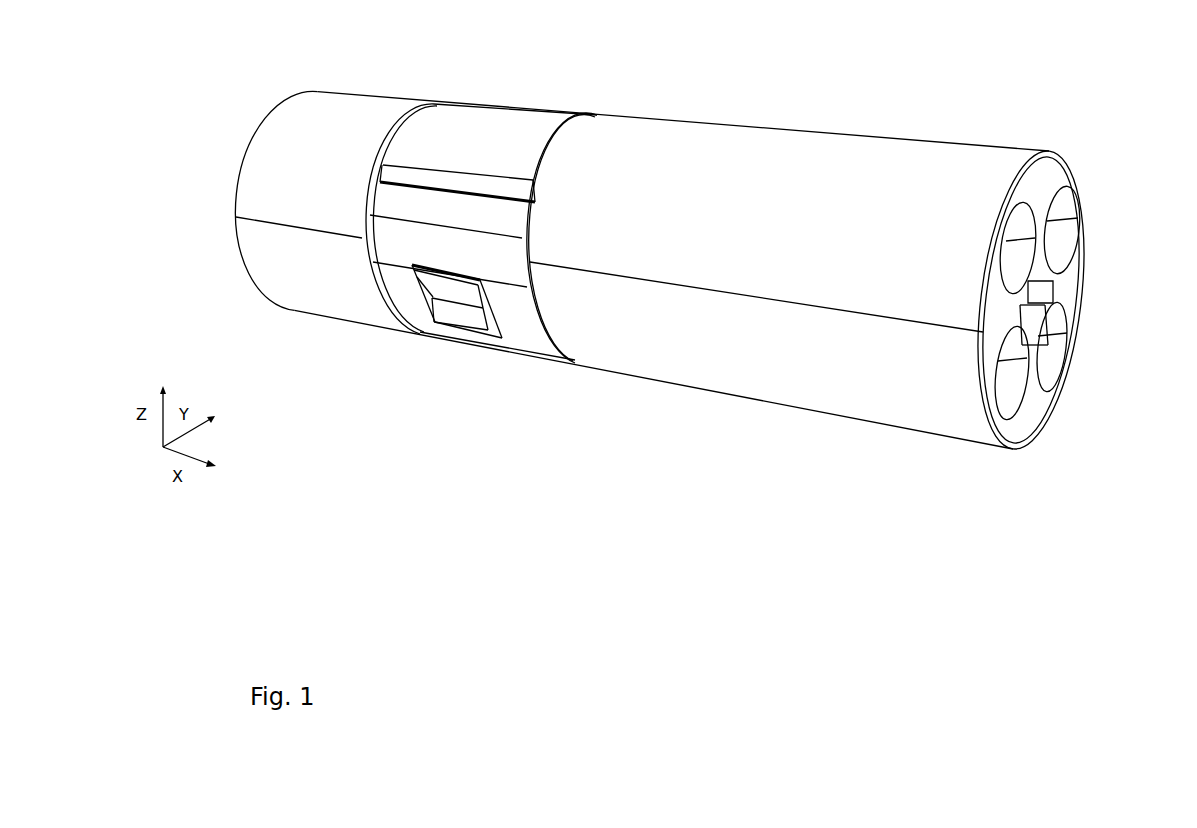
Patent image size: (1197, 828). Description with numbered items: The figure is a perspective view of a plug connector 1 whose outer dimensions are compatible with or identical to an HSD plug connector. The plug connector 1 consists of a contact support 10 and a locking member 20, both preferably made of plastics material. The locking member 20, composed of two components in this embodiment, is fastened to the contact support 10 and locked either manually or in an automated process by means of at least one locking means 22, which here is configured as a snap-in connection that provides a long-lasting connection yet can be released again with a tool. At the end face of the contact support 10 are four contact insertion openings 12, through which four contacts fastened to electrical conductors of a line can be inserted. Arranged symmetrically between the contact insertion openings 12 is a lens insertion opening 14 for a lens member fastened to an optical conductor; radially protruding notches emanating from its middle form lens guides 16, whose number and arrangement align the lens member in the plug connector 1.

The plug connector 1 is at (681, 53).
The contact support 10 is at (368, 115).
The contact insertion openings 12 is at (1005, 390).
The lens insertion opening 14 is at (1038, 302).
The lens guides 16 is at (1000, 340).
The locking member 20 is at (497, 120).
The locking means 22 is at (452, 290).